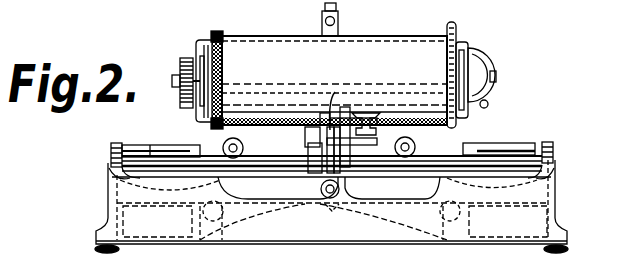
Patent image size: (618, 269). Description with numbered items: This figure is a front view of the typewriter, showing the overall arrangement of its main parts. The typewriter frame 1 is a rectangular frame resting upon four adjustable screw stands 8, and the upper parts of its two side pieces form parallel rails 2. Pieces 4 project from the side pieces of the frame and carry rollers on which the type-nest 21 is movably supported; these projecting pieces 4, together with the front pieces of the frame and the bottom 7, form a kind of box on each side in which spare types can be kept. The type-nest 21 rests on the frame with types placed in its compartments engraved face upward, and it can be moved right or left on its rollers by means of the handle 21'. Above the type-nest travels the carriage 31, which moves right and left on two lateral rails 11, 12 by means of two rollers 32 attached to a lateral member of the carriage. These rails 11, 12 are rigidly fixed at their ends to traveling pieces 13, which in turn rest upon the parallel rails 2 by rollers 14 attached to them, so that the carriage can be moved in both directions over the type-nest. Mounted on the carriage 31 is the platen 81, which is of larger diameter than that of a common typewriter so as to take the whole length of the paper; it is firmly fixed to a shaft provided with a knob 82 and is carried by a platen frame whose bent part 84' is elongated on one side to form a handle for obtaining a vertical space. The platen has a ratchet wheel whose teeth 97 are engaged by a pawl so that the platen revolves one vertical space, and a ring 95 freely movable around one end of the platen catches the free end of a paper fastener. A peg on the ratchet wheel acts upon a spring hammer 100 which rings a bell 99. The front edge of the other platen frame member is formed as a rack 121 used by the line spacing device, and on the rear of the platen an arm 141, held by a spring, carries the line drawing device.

The typewriter frame 1 is at (331, 202).
The parallel rails 2 is at (113, 168).
The projecting piece 4 is at (191, 215).
The bottom 7 is at (150, 222).
The adjustable screw stands 8 is at (95, 249).
The rail 11 is at (452, 150).
The rail 12 is at (498, 150).
The traveling pieces 13 is at (128, 152).
The rollers 14 is at (111, 152).
The type-nest 21 is at (229, 191).
The handle 21' is at (429, 189).
The carriage 31 is at (332, 110).
The rollers 32 is at (238, 136).
The platen 81 is at (334, 80).
The knob 82 is at (186, 58).
The bent part 84' is at (488, 70).
The ring 95 is at (222, 58).
The teeth of the ratchet wheel 97 is at (448, 67).
The bell 99 is at (487, 66).
The spring hammer 100 is at (488, 101).
The rack 121 is at (262, 122).
The spring arm 141 is at (346, 20).